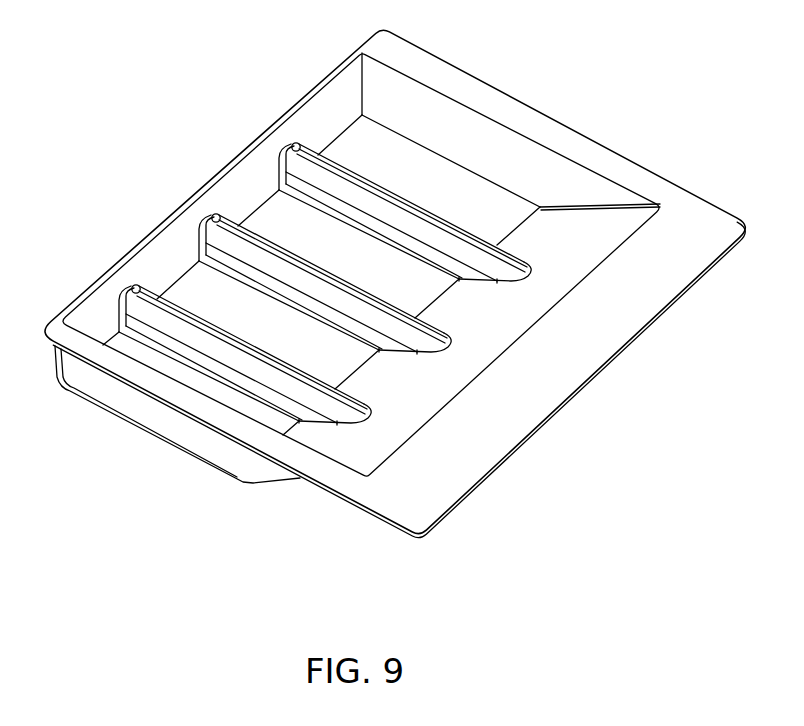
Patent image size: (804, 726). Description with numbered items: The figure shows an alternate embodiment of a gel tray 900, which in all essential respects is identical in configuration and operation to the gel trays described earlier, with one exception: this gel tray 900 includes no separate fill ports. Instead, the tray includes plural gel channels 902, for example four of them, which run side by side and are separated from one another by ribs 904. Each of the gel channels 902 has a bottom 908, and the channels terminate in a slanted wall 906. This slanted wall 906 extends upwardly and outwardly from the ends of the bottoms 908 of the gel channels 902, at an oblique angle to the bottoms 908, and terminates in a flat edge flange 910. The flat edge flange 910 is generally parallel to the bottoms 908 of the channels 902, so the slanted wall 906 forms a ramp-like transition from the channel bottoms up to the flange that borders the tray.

The gel tray 900 is at (666, 80).
The gel channels 902 is at (400, 152).
The ribs 904 is at (294, 166).
The slanted wall 906 is at (560, 230).
The bottoms 908 is at (270, 225).
The flat edge flange 910 is at (652, 290).